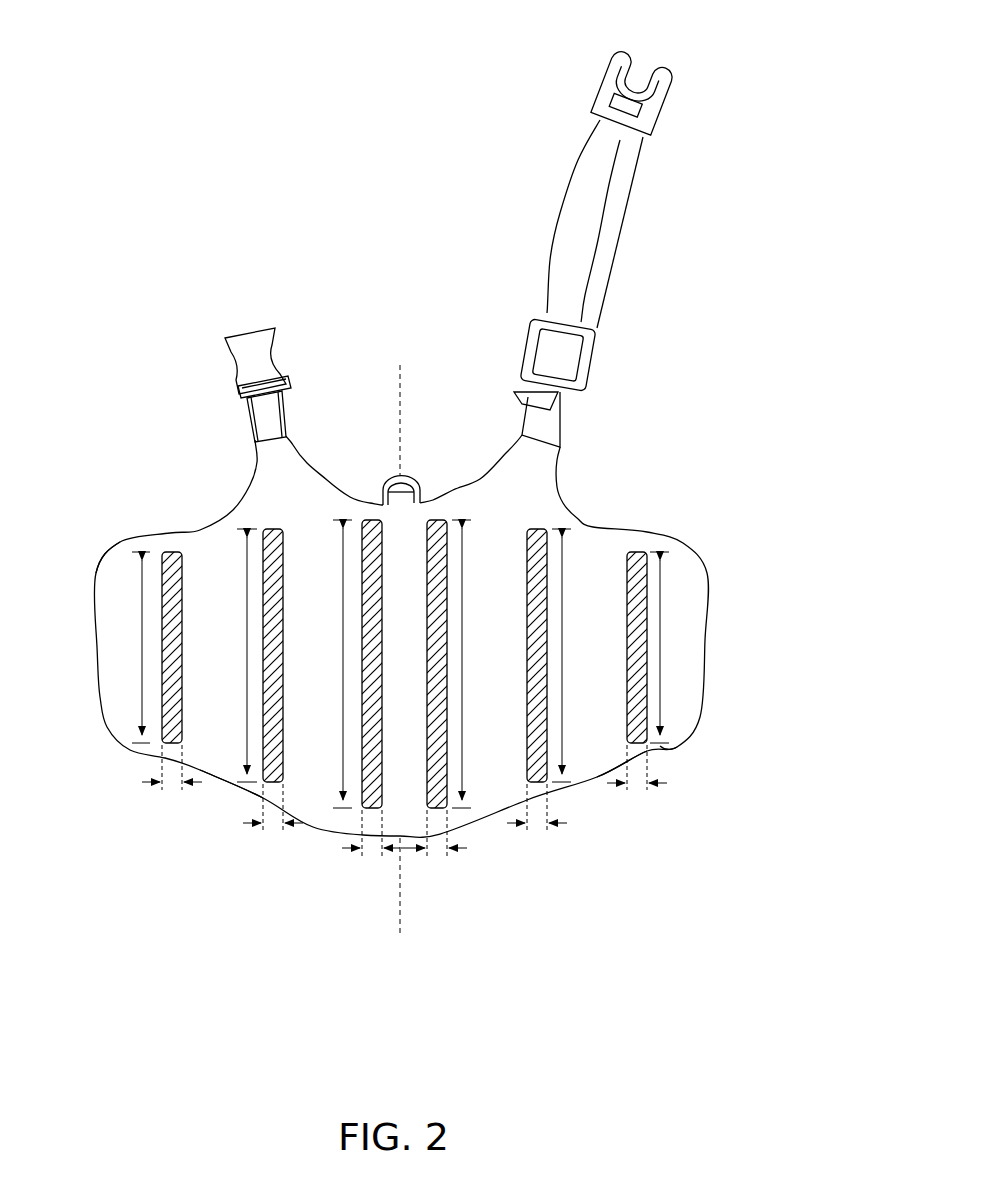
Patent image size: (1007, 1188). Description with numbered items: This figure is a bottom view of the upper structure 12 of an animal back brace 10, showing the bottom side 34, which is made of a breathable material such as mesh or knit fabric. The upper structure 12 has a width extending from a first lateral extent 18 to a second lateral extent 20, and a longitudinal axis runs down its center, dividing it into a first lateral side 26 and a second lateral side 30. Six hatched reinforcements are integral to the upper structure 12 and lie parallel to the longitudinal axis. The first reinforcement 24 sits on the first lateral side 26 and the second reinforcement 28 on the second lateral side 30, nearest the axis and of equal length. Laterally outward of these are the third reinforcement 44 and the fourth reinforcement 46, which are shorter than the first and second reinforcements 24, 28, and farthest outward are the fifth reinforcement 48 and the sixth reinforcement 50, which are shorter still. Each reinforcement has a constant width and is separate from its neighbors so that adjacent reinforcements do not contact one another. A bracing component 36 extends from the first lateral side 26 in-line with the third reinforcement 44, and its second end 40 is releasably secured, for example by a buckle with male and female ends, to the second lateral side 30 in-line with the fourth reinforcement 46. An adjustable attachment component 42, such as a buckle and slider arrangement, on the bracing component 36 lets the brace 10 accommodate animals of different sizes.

The brace 10 is at (692, 393).
The upper structure 12 is at (404, 631).
The first lateral extent 18 is at (702, 552).
The second lateral extent 20 is at (112, 543).
The first reinforcement 24 is at (425, 618).
The first lateral side 26 is at (597, 882).
The second reinforcement 28 is at (382, 733).
The second lateral side 30 is at (250, 885).
The bottom side 34 is at (181, 458).
The bracing component 36 is at (539, 213).
The second end 40 is at (670, 63).
The adjustable attachment component 42 is at (630, 222).
The third reinforcement 44 is at (525, 745).
The fourth reinforcement 46 is at (283, 745).
The fifth reinforcement 48 is at (625, 618).
The sixth reinforcement 50 is at (182, 690).